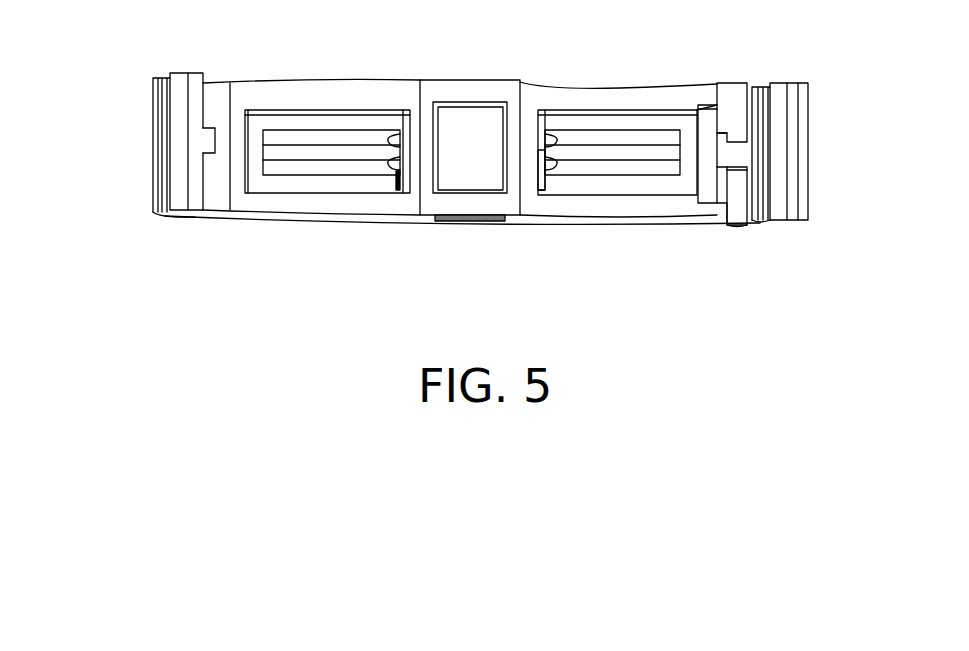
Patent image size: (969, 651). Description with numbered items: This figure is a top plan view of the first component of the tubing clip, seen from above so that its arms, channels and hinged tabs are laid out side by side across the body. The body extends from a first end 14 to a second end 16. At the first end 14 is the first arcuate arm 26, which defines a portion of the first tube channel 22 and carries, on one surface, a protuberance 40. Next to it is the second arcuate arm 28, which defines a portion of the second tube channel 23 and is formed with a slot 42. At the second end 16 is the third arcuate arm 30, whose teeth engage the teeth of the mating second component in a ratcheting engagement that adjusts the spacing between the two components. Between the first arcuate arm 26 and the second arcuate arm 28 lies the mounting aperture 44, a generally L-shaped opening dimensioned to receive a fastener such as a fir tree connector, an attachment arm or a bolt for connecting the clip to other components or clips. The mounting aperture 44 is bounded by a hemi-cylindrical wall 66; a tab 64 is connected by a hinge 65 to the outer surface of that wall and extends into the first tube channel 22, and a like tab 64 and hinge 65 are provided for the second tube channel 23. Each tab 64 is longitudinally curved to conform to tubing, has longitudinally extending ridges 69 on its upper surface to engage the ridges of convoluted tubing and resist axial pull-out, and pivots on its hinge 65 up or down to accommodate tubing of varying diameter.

The first end 14 is at (105, 164).
The second end 16 is at (855, 169).
The first tube channel 22 is at (258, 178).
The second tube channel 23 is at (687, 180).
The first arcuate arm 26 is at (160, 93).
The second arcuate arm 28 is at (740, 92).
The third arcuate arm 30 is at (782, 140).
The protuberance 40 is at (203, 140).
The slot 42 is at (723, 155).
The mounting aperture 44 is at (483, 153).
The tab 64 is at (322, 165).
The hinge 65 is at (393, 168).
The hemi-cylindrical wall 66 is at (423, 103).
The strip loops 69 is at (367, 137).